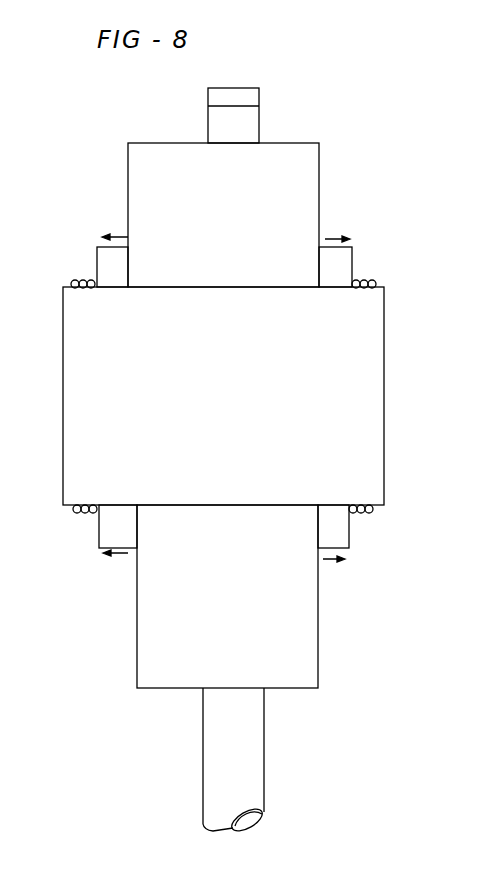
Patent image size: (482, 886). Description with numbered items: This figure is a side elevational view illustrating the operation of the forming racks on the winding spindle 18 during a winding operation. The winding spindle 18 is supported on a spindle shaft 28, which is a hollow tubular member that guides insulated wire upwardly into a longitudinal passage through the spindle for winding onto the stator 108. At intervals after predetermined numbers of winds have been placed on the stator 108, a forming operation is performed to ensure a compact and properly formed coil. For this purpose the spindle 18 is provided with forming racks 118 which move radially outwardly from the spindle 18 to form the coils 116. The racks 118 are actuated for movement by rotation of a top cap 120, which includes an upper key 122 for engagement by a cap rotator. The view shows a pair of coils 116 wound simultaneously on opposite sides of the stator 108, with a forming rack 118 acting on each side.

The winding spindle 18 is at (319, 172).
The spindle shaft 28 is at (218, 745).
The stator 108 is at (63, 413).
The coils 116 is at (83, 278).
The forming racks 118 is at (97, 247).
The top cap 120 is at (207, 112).
The upper key 122 is at (259, 99).